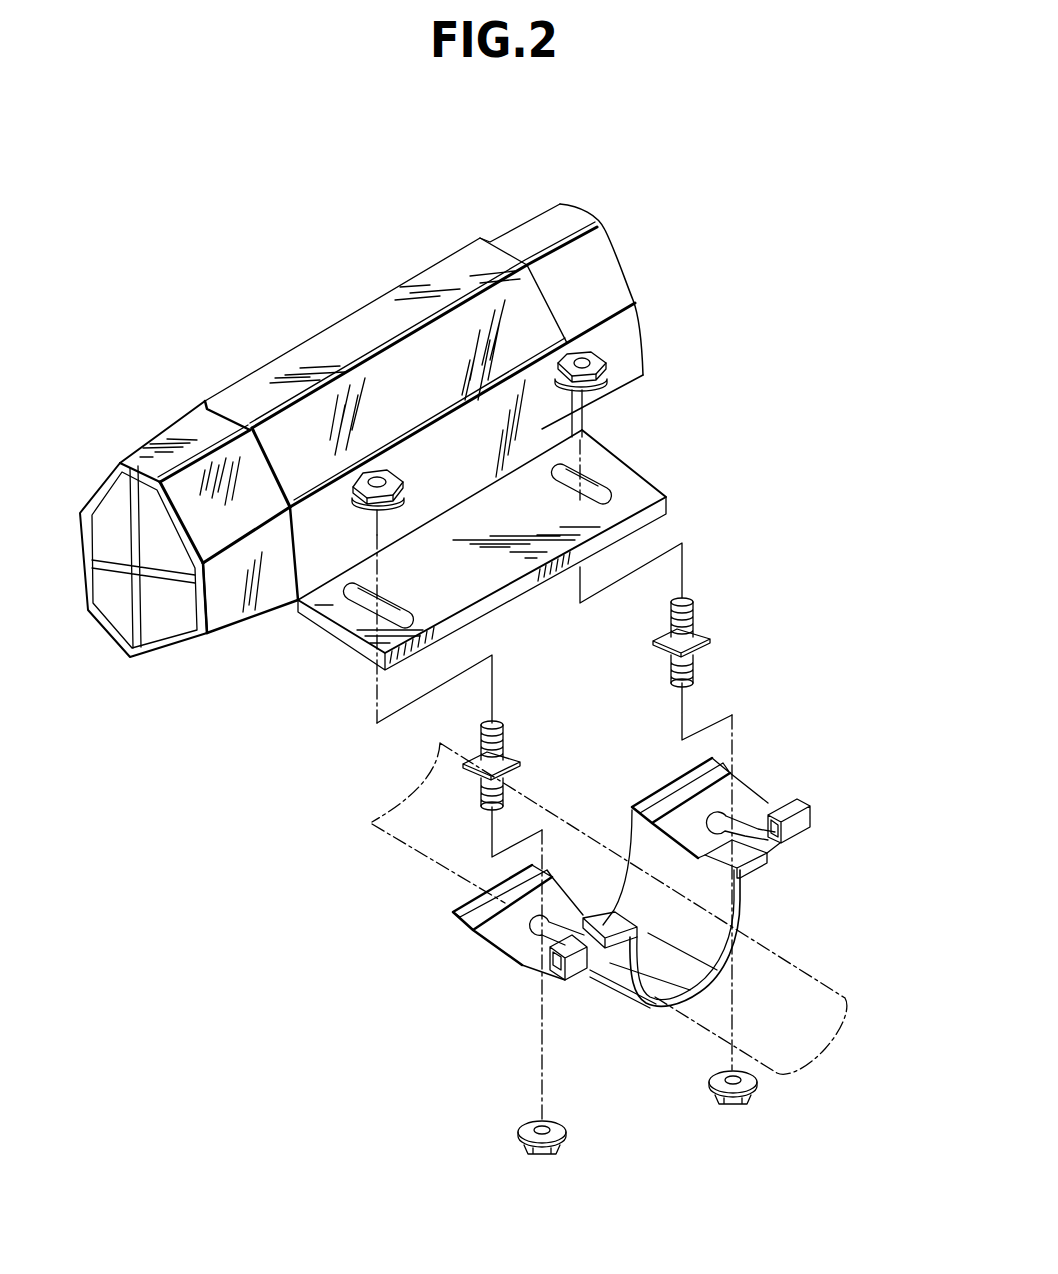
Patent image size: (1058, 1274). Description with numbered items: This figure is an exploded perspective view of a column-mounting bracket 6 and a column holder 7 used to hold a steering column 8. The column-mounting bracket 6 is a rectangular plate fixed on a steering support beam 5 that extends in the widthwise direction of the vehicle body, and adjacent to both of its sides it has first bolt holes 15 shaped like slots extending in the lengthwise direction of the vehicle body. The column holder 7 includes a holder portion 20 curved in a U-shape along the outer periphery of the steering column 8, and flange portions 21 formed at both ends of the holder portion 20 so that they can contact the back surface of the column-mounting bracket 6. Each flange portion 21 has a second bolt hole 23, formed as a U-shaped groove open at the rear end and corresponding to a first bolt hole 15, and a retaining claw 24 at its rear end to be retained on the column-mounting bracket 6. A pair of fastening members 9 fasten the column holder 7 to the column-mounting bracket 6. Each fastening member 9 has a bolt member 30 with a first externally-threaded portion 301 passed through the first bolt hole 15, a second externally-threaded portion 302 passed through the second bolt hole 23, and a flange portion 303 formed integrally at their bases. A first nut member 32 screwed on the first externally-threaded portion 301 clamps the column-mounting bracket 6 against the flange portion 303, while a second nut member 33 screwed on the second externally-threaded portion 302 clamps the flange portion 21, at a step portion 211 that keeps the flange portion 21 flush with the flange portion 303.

The steering support beam 5 is at (618, 340).
The column-mounting bracket 6 is at (499, 549).
The column holder 7 is at (633, 902).
The steering column 8 is at (822, 962).
The fastening member 9 is at (642, 780).
The first bolt hole 15 is at (612, 485).
The holder portion 20 is at (646, 1008).
The flange portion 21 is at (612, 854).
The second bolt hole 23 is at (733, 812).
The retaining claw 24 is at (808, 806).
The bolt member 30 is at (649, 683).
The first nut member 32 is at (608, 372).
The second nut member 33 is at (733, 1108).
The step portion 211 is at (773, 797).
The first externally-threaded portion 301 is at (500, 725).
The second externally-threaded portion 302 is at (506, 797).
The flange portion 303 is at (514, 763).